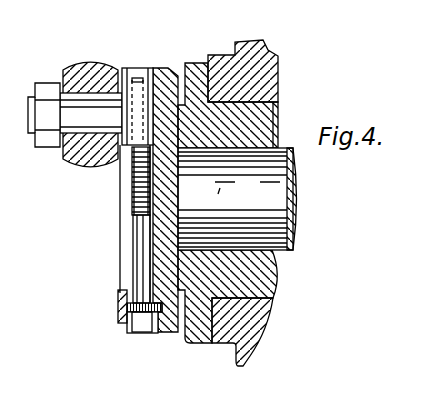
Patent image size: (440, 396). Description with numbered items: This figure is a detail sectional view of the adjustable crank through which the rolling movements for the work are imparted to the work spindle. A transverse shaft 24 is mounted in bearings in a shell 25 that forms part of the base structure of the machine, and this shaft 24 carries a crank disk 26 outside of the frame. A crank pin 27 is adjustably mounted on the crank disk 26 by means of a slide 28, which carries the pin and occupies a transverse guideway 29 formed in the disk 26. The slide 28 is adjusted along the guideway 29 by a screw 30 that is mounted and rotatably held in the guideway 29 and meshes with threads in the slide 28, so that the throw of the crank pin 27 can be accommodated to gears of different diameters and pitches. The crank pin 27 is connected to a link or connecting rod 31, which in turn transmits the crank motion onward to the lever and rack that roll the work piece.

The transverse shaft 24 is at (262, 177).
The shell 25 is at (263, 93).
The crank disk 26 is at (163, 72).
The crank pin 27 is at (95, 115).
The slide 28 is at (138, 138).
The transverse guideway 29 is at (130, 216).
The screw 30 is at (145, 230).
The link or connecting rod 31 is at (83, 63).